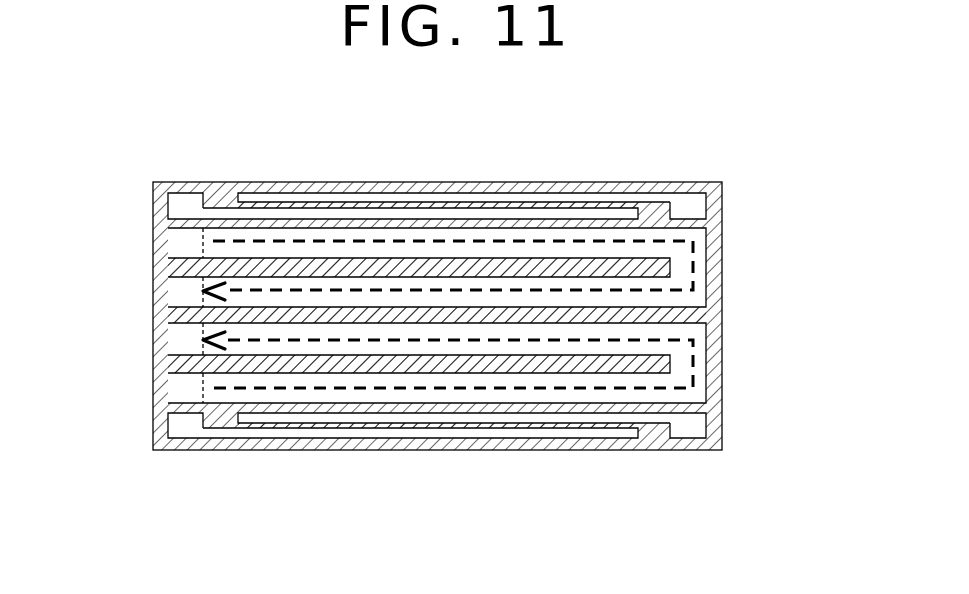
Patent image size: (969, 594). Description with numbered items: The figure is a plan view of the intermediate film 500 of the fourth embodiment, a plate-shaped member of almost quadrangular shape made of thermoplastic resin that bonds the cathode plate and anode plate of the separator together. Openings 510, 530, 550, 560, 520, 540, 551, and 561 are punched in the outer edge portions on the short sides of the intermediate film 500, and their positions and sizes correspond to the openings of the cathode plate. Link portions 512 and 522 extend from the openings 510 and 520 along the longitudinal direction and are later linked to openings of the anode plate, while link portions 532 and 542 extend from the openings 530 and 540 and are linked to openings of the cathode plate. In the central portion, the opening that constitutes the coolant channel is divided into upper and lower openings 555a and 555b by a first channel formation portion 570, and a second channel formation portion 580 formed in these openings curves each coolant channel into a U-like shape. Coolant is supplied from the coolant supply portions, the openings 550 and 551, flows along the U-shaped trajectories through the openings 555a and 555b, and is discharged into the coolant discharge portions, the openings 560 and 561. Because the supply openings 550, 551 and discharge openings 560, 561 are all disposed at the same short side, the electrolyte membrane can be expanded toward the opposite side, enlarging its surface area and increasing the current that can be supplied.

The intermediate film 500 is at (714, 206).
The opening 510 is at (183, 200).
The link portion 512 is at (613, 210).
The opening 520 is at (688, 431).
The link portion 522 is at (253, 413).
The opening 530 is at (183, 432).
The link portion 532 is at (596, 430).
The opening 540 is at (687, 199).
The link portion 542 is at (246, 197).
The opening 550 is at (172, 389).
The opening 551 is at (172, 243).
The opening 555a is at (385, 397).
The opening 555b is at (372, 234).
The opening 560 is at (172, 340).
The opening 561 is at (172, 292).
The first channel formation portion 570 is at (708, 313).
The second channel formation portion 580 is at (492, 268).